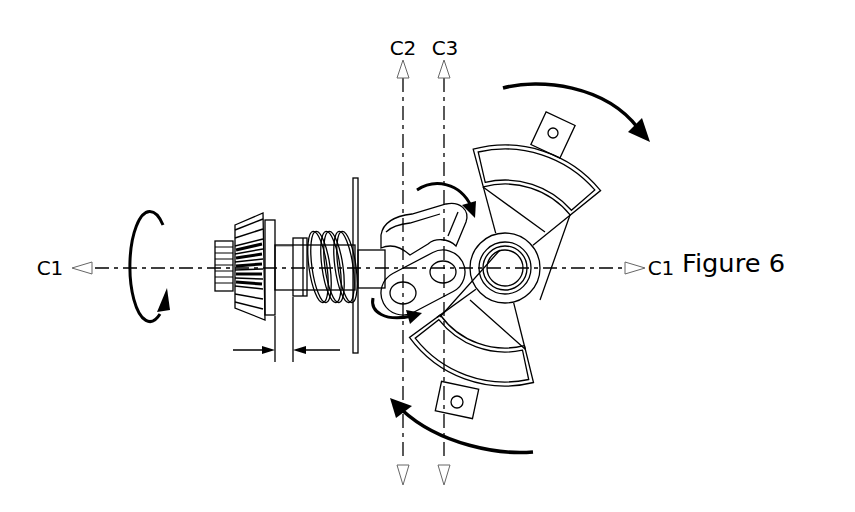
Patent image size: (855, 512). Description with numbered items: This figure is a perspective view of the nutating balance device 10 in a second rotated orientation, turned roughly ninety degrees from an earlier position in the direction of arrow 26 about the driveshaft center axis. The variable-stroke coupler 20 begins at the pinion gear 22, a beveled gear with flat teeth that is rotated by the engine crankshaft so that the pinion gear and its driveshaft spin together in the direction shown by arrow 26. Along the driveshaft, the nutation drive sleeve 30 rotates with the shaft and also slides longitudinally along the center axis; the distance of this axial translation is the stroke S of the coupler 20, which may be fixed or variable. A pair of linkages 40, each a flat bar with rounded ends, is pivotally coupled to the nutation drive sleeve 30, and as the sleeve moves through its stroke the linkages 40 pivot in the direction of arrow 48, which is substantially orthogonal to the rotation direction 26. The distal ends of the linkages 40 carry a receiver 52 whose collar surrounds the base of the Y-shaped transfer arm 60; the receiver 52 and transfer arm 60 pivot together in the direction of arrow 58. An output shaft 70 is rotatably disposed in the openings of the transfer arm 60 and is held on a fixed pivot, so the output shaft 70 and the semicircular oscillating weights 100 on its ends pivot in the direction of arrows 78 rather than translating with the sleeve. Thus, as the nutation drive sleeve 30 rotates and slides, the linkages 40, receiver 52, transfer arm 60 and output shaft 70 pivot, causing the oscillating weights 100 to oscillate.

The nutating balance device 10 is at (163, 70).
The variable-stroke coupler 20 is at (300, 150).
The pinion gear 22 is at (250, 222).
The direction of rotation 26 is at (154, 267).
The nutation drive sleeve 30 is at (294, 238).
The linkage 40 is at (397, 225).
The direction of linkage pivoting 48 is at (385, 322).
The receiver 52 is at (423, 205).
The direction of receiver pivoting 58 is at (437, 195).
The transfer arm 60 is at (530, 245).
The output shaft 70 is at (517, 200).
The direction of output shaft pivoting 78 is at (593, 93).
The oscillating weight 100 is at (590, 183).